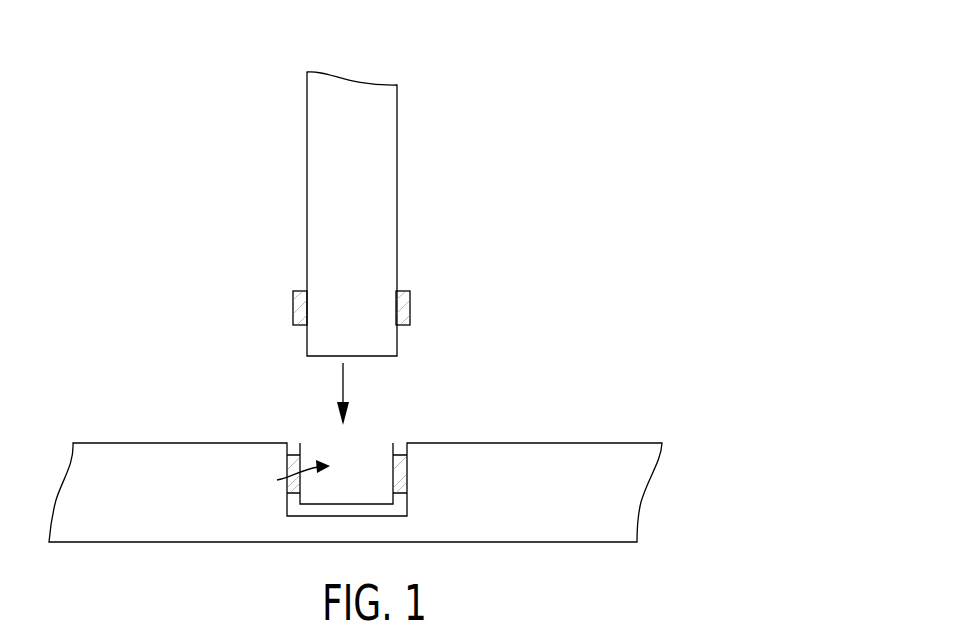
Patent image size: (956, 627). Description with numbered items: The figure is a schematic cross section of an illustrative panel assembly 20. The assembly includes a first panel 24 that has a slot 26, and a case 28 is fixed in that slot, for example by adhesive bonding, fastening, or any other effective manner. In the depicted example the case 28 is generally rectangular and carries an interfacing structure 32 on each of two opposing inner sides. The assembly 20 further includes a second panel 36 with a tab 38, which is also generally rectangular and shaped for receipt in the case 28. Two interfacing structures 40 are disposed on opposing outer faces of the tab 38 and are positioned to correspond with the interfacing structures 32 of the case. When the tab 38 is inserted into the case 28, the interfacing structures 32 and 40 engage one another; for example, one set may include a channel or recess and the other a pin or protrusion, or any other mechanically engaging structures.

The panel assembly 20 is at (560, 74).
The first panel 24 is at (508, 442).
The slot 26 is at (290, 478).
The case 28 is at (404, 447).
The interfacing structure 32 is at (400, 477).
The second panel 36 is at (397, 177).
The tab 38 is at (313, 339).
The interfacing structure 40 is at (396, 312).